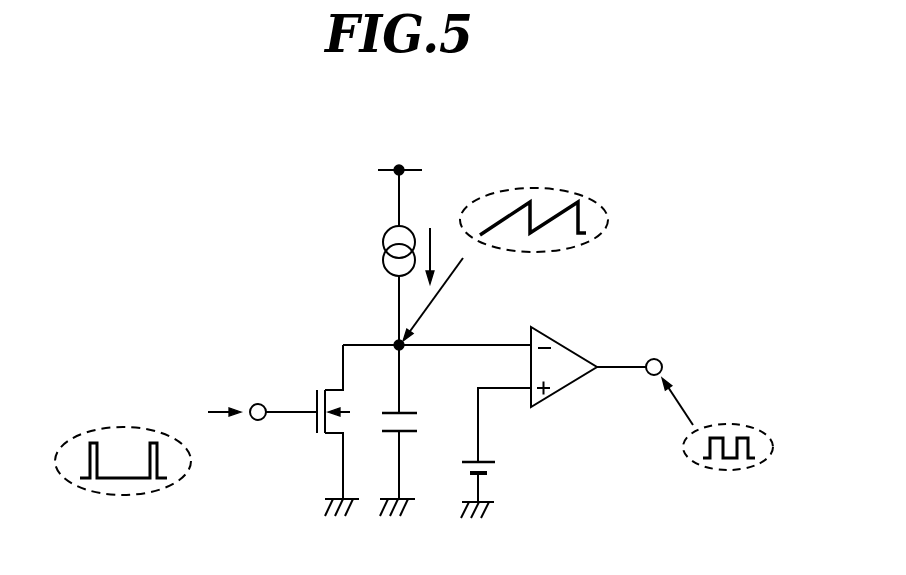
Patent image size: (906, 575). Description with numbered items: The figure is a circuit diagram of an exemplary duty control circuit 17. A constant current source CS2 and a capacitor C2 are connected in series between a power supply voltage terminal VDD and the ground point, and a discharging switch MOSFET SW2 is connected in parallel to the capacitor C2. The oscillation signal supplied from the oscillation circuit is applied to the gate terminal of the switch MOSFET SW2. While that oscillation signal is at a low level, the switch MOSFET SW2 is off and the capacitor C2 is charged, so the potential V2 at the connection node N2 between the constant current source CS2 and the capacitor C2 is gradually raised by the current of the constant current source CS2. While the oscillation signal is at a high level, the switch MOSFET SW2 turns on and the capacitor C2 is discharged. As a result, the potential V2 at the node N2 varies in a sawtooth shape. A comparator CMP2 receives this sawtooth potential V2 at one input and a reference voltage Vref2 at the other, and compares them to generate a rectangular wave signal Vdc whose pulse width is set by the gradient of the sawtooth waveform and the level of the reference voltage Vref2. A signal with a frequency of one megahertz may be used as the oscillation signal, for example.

The duty control circuit 17 is at (722, 188).
The power supply voltage terminal VDD is at (398, 151).
The constant current source CS2 is at (372, 232).
The connection node N2 is at (395, 342).
The potential at connection node V2 is at (505, 264).
The discharging switch MOSFET SW2 is at (311, 430).
The capacitor C2 is at (416, 430).
The comparator CMP2 is at (568, 345).
The reference voltage Vref2 is at (509, 453).
The rectangular wave signal Vdc is at (709, 404).